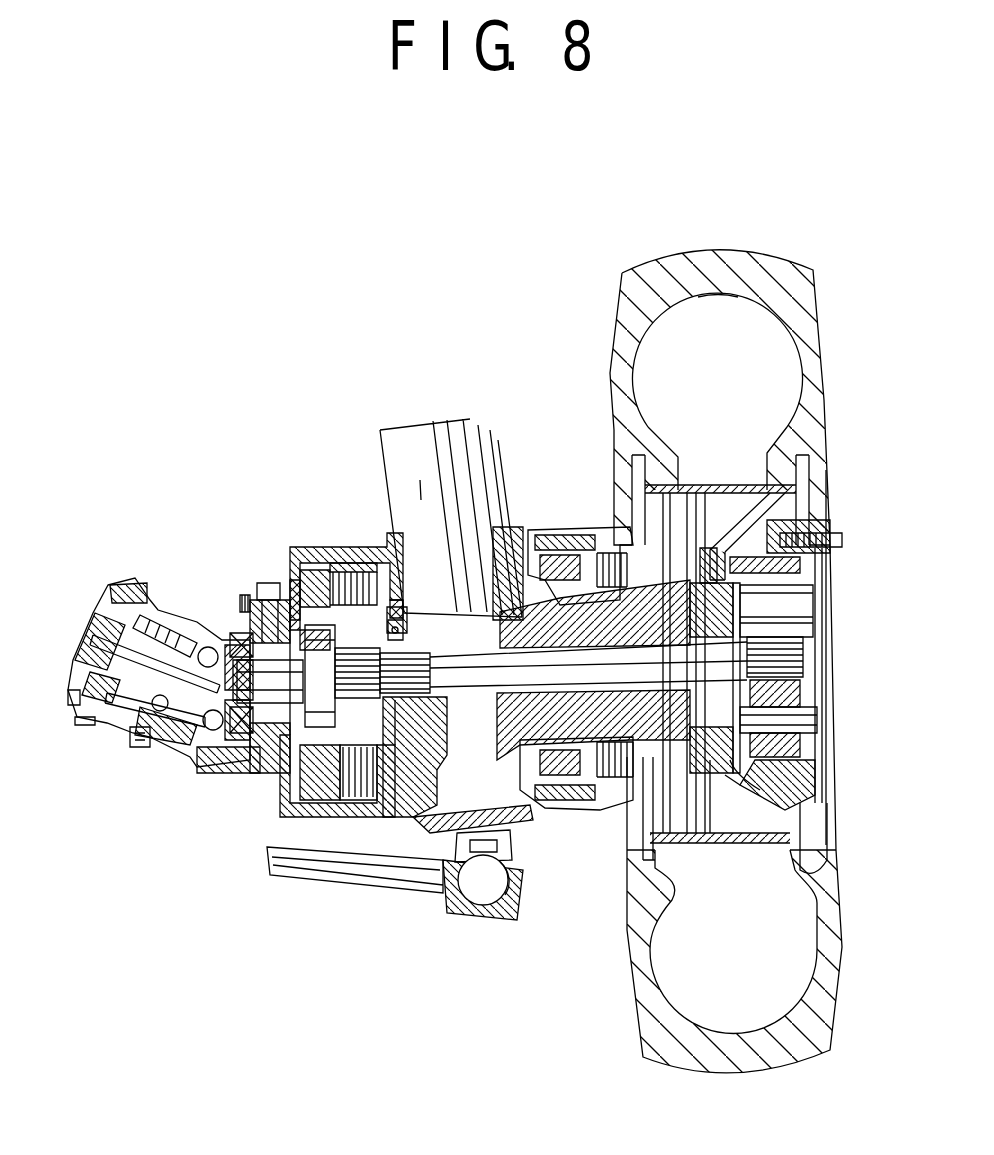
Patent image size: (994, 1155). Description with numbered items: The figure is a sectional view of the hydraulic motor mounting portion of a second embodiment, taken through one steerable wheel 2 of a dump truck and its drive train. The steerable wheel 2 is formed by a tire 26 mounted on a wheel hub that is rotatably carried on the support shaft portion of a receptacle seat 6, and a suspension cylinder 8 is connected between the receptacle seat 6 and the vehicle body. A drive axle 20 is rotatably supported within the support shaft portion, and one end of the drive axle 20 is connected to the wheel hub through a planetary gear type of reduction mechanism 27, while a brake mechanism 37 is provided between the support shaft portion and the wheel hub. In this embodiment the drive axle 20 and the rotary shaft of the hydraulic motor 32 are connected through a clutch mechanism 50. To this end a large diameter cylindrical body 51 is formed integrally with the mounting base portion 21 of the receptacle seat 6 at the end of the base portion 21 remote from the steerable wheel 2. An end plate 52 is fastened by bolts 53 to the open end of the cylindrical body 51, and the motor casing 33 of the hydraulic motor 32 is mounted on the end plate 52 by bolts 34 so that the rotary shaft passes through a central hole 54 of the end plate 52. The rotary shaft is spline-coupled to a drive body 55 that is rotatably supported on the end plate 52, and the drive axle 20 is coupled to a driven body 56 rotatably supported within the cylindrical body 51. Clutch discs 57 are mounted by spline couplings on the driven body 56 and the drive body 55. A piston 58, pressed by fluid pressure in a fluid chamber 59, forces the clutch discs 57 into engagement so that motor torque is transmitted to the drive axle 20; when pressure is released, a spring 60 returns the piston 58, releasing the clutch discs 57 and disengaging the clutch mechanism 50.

The steerable wheel 2 is at (808, 352).
The tire 26 is at (812, 402).
The planetary gear type of reduction mechanism 27 is at (849, 583).
The brake mechanism 37 is at (550, 515).
The suspension cylinder 8 is at (400, 458).
The base portion 21 is at (393, 572).
The drive axle 20 is at (472, 680).
The receptacle seat 6 is at (403, 803).
The cylindrical body 51 is at (360, 553).
The piston 58 is at (330, 567).
The central hole 54 is at (341, 759).
The drive body 55 is at (342, 673).
The clutch discs 57 is at (397, 577).
The driven body 56 is at (393, 593).
The clutch mechanism 50 is at (256, 577).
The end plate 52 is at (263, 580).
The bolts 53 is at (270, 563).
The fluid chamber 59 is at (312, 557).
The spring 60 is at (310, 577).
The bolts 34 is at (248, 600).
The hydraulic motor 32 is at (177, 592).
The motor casing 33 is at (190, 742).